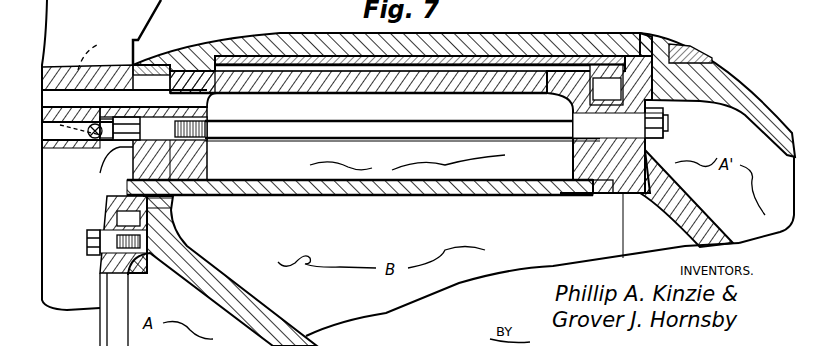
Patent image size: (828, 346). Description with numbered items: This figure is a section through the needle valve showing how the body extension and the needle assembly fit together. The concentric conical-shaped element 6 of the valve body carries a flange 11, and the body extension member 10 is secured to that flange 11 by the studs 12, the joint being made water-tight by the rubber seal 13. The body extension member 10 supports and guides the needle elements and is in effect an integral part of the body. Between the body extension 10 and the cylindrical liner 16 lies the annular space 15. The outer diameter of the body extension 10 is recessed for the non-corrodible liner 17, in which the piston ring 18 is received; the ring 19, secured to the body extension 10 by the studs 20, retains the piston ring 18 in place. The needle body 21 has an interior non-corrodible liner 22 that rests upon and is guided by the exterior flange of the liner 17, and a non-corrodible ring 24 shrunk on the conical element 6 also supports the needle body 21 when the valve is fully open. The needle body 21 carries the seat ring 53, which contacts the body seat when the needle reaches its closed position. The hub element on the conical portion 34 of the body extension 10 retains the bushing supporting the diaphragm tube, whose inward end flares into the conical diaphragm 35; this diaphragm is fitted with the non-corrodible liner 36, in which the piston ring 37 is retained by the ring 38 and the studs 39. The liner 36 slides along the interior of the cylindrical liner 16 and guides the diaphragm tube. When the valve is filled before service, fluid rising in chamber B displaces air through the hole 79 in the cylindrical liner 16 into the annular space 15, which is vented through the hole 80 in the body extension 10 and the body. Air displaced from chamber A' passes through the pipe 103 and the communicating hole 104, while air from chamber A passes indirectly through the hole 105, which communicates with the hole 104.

The concentric conical-shaped element 6 is at (113, 67).
The body extension member 10 is at (533, 98).
The flange 11 is at (120, 176).
The studs 12 is at (120, 150).
The rubber seal 13 is at (174, 78).
The annular space 15 is at (407, 165).
The cylindrical liner 16 is at (476, 196).
The non-corrodible liner 17 is at (570, 63).
The piston ring 18 is at (604, 64).
The ring 19 is at (652, 67).
The studs 20 is at (665, 123).
The needle body 21 is at (766, 106).
The interior non-corrodible liner 22 is at (466, 63).
The non-corrodible ring 24 is at (137, 63).
The conical portion 34 is at (686, 188).
The conical diaphragm 35 is at (268, 305).
The non-corrodible liner 36 is at (167, 198).
The piston ring 37 is at (167, 208).
The ring 38 is at (100, 213).
The studs 39 is at (87, 250).
The seat ring 53 is at (692, 50).
The hole 79 is at (610, 194).
The hole 80 is at (207, 100).
The pipe 103 is at (255, 123).
The communicating hole 104 is at (57, 130).
The hole 105 is at (85, 150).